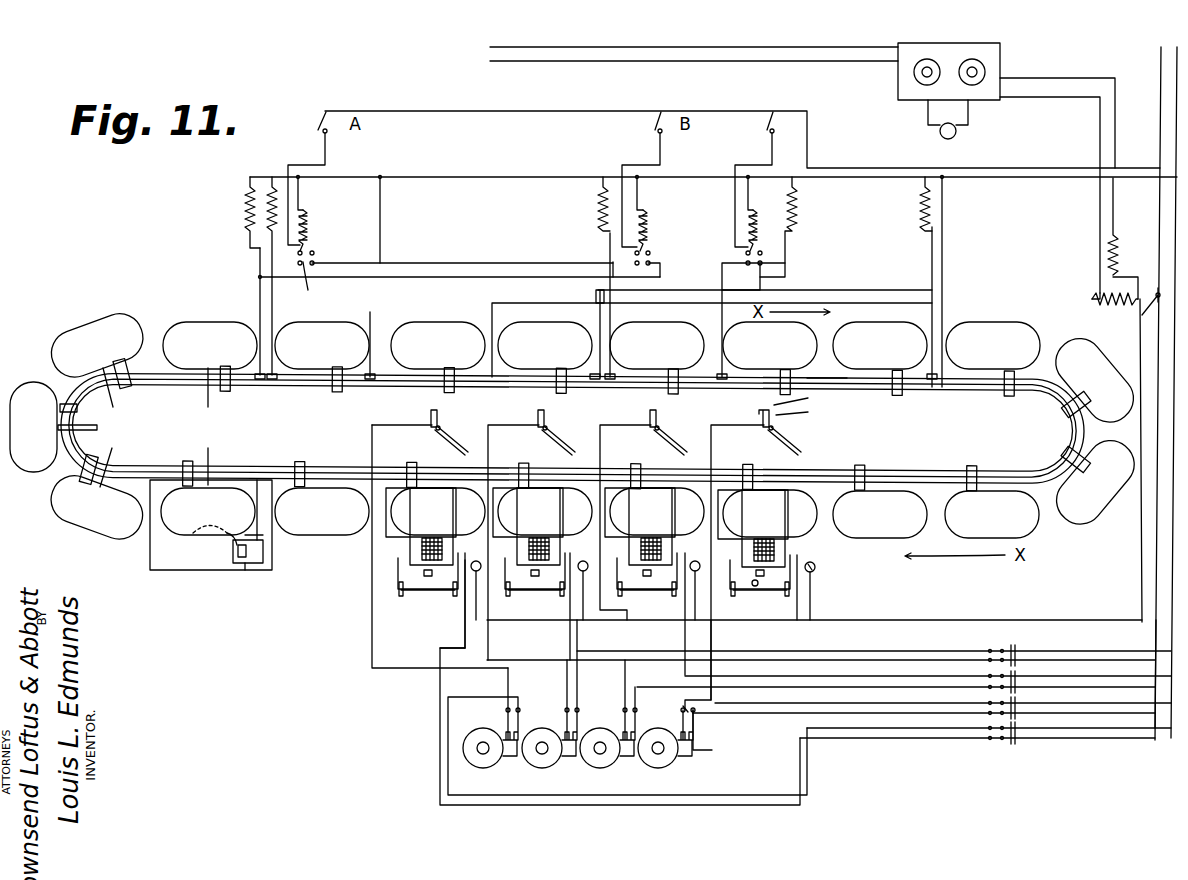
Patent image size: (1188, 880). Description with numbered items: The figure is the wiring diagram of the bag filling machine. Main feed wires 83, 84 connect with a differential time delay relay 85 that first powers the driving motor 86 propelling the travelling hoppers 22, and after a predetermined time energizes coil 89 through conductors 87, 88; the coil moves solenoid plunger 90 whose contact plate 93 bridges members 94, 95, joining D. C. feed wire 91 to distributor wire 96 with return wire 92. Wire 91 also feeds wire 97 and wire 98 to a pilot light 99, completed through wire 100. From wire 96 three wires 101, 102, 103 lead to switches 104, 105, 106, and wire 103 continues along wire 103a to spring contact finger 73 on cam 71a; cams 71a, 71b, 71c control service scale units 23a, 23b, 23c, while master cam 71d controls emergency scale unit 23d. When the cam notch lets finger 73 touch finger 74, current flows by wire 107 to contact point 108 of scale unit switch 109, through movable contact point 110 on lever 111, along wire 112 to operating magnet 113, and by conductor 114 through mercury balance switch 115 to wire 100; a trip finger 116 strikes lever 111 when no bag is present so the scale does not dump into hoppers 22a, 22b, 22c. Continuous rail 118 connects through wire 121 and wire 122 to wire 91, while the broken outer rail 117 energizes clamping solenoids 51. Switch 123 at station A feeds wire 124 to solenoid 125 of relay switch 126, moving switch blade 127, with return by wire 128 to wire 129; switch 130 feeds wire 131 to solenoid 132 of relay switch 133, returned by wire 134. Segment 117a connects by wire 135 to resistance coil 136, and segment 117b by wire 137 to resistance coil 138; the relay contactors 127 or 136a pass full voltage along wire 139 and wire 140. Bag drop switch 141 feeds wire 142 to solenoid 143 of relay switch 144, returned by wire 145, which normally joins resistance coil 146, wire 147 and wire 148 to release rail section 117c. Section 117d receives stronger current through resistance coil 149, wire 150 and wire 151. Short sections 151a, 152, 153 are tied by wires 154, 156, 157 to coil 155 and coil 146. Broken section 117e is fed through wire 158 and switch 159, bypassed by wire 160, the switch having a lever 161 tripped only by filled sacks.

The travelling hoppers 22 is at (997, 331).
The hopper 22a is at (880, 514).
The hopper 22b is at (992, 514).
The hopper 22c is at (1095, 482).
The scale unit 23a is at (767, 555).
The scale unit 23b is at (652, 542).
The scale unit 23c is at (540, 535).
The emergency scale unit 23d is at (428, 529).
The solenoid 51 is at (393, 550).
The cam 71a is at (665, 766).
The cam 71b is at (602, 766).
The cam 71c is at (540, 768).
The master cam 71d is at (480, 768).
The spring contact finger 73 is at (712, 750).
The spring contact finger 74 is at (680, 714).
The main feed wire 83 is at (586, 54).
The main feed wire 84 is at (583, 64).
The differential time delay relay 85 is at (1013, 55).
The driving motor 86 is at (940, 137).
The conductor 87 is at (1060, 75).
The conductor 88 is at (1052, 100).
The coil 89 is at (1100, 306).
The solenoid plunger 90 is at (1090, 300).
The D. C. feed wire 91 is at (1158, 210).
The return wire 92 is at (1168, 545).
The contact plate 93 is at (1146, 306).
The contact member 94 is at (1128, 254).
The contact member 95 is at (1153, 316).
The distributor wire 96 is at (1153, 636).
The wire 97 is at (1028, 618).
The wire 98 is at (814, 592).
The pilot light 99 is at (817, 560).
The wire 100 is at (835, 633).
The wire 101 is at (1078, 664).
The wire 102 is at (1082, 692).
The wire 103 is at (1085, 715).
The wire 103a is at (948, 715).
The switch 104 is at (1018, 650).
The switch 105 is at (1018, 676).
The switch 106 is at (1018, 703).
The wire 107 is at (716, 633).
The contact point 108 is at (765, 408).
The scale unit switch 109 is at (807, 449).
The movable contact point 110 is at (808, 404).
The lever 111 is at (802, 418).
The wire 112 is at (714, 456).
The operating magnet 113 is at (752, 550).
The conductor 114 is at (745, 587).
The mercury balance switch 115 is at (762, 591).
The trip finger 116 is at (208, 455).
The rail 117 is at (332, 470).
The rail segment 117a is at (302, 374).
The rail segment 117b is at (627, 383).
The release rail section 117c is at (842, 379).
The rail section 117d is at (482, 376).
The broken section 117e is at (230, 475).
The rail 118 is at (432, 389).
The wire 121 is at (944, 286).
The wire 122 is at (1030, 150).
The switch 123 is at (306, 126).
The wire 124 is at (327, 152).
The solenoid 125 is at (325, 219).
The relay switch 126 is at (327, 256).
The switch blade 127 is at (308, 270).
The wire 128 is at (302, 191).
The wire 129 is at (852, 194).
The switch 130 is at (644, 128).
The wire 131 is at (662, 153).
The solenoid 132 is at (663, 225).
The relay switch 133 is at (663, 261).
The wire 134 is at (640, 193).
The wire 135 is at (275, 316).
The resistance coil 136 is at (265, 232).
The contactor 136a is at (613, 268).
The wire 137 is at (613, 316).
The resistance coil 138 is at (598, 193).
The wire 139 is at (480, 262).
The wire 140 is at (400, 220).
The bag drop switch 141 is at (765, 124).
The wire 142 is at (768, 153).
The solenoid 143 is at (745, 226).
The relay switch 144 is at (777, 261).
The wire 145 is at (750, 200).
The resistance coil 146 is at (800, 210).
The wire 147 is at (790, 278).
The wire 148 is at (750, 280).
The resistance coil 149 is at (922, 222).
The wire 150 is at (930, 316).
The wire 151 is at (852, 298).
The short rail section 151a is at (258, 372).
The short rail section 152 is at (372, 330).
The short rail section 153 is at (588, 368).
The wire 154 is at (258, 288).
The resistance coil 155 is at (240, 207).
The wire 156 is at (388, 280).
The wire 157 is at (595, 296).
The wire 158 is at (253, 525).
The switch 159 is at (241, 575).
The wire 160 is at (195, 572).
The lever 161 is at (195, 538).